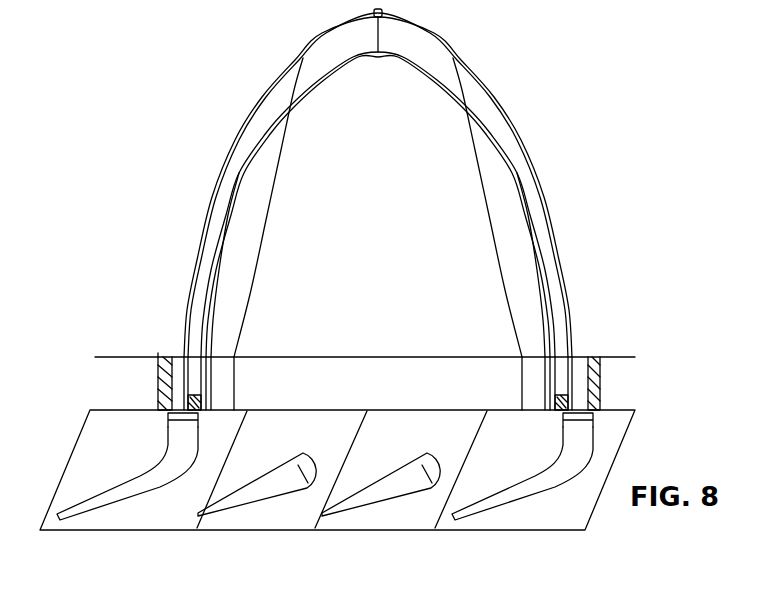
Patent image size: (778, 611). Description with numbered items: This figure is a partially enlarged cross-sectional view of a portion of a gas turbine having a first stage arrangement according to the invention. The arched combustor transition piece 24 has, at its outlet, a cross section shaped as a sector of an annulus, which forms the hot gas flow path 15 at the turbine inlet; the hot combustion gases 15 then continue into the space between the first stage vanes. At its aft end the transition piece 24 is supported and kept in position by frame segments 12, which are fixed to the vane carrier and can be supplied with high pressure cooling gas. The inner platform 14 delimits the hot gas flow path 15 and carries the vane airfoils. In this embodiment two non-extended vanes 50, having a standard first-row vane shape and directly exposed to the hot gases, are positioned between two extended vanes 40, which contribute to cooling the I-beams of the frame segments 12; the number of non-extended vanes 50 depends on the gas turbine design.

The frame segments 12 is at (132, 390).
The inner platform 14 is at (180, 497).
The hot gas flow path 15 is at (358, 243).
The combustor transition piece 24 is at (473, 262).
The extended vanes 40 is at (138, 482).
The non-extended vanes 50 is at (265, 492).